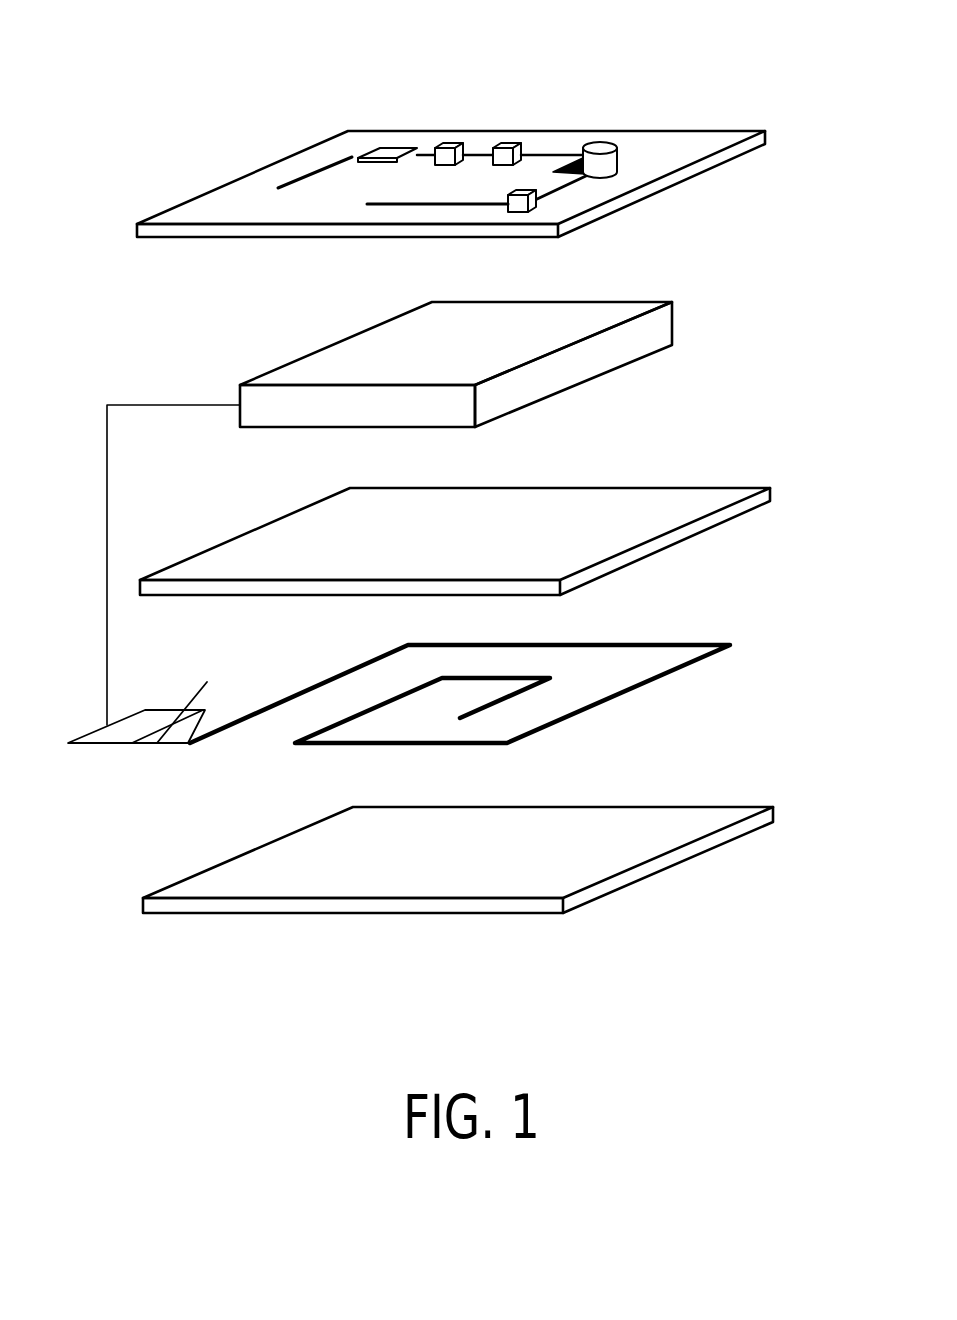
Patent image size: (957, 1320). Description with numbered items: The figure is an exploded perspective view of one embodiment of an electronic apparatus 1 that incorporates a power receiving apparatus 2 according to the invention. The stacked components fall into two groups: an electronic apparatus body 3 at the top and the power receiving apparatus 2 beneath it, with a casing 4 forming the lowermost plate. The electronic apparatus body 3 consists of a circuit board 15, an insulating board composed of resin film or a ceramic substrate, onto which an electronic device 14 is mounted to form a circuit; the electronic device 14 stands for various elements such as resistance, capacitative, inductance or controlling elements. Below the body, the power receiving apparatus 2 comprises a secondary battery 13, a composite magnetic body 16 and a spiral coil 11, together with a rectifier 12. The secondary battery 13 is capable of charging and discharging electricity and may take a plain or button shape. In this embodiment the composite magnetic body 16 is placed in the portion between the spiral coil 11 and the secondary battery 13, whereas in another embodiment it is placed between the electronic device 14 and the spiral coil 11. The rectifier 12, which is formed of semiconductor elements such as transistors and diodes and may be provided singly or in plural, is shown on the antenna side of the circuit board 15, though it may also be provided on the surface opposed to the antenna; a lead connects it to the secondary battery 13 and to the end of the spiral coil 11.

The electronic apparatus 1 is at (681, 68).
The power receiving apparatus 2 is at (805, 292).
The electronic apparatus body 3 is at (807, 123).
The casing 4 is at (668, 867).
The spiral coil 11 is at (620, 695).
The rectifier 12 is at (98, 745).
The secondary battery 13 is at (573, 385).
The electronic device 14 is at (597, 143).
The circuit board 15 is at (662, 192).
The composite magnetic body 16 is at (663, 548).